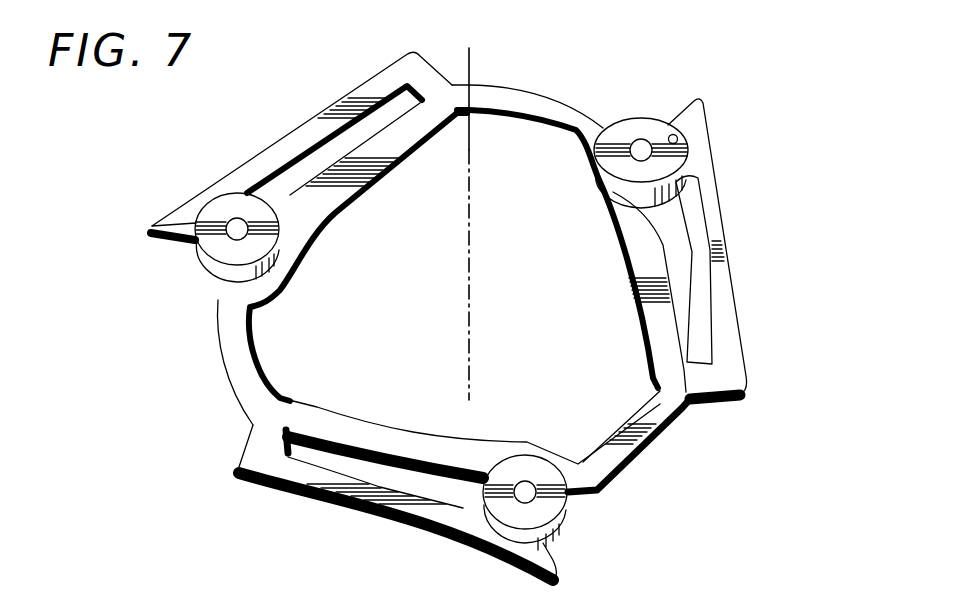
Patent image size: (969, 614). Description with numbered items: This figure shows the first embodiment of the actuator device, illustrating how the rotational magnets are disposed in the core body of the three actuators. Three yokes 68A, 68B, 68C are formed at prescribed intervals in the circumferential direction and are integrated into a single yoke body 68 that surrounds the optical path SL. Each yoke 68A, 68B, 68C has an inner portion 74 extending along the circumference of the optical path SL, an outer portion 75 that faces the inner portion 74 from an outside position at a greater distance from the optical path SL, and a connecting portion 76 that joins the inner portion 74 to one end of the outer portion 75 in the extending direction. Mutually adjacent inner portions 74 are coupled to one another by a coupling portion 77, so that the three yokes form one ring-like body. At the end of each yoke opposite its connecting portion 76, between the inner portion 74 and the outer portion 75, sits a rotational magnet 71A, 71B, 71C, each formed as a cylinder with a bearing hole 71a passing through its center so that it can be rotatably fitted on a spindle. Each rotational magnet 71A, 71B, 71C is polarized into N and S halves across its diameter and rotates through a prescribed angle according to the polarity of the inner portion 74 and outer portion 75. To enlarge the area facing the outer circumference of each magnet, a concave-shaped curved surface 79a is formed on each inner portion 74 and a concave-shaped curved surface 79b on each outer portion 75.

The yoke body 68 is at (690, 425).
The yoke 68A is at (745, 218).
The yoke 68B is at (294, 106).
The yoke 68C is at (372, 530).
The rotational magnet 71A is at (627, 125).
The rotational magnet 71B is at (223, 200).
The rotational magnet 71C is at (552, 510).
The bearing hole 71a is at (645, 142).
The inner portion 74 is at (330, 207).
The outer portion 75 is at (272, 150).
The connecting portion 76 is at (432, 73).
The coupling portion 77 is at (540, 96).
The concave-shaped curved surface 79a is at (593, 160).
The concave-shaped curved surface 79b is at (678, 133).
The optical path SL is at (470, 248).